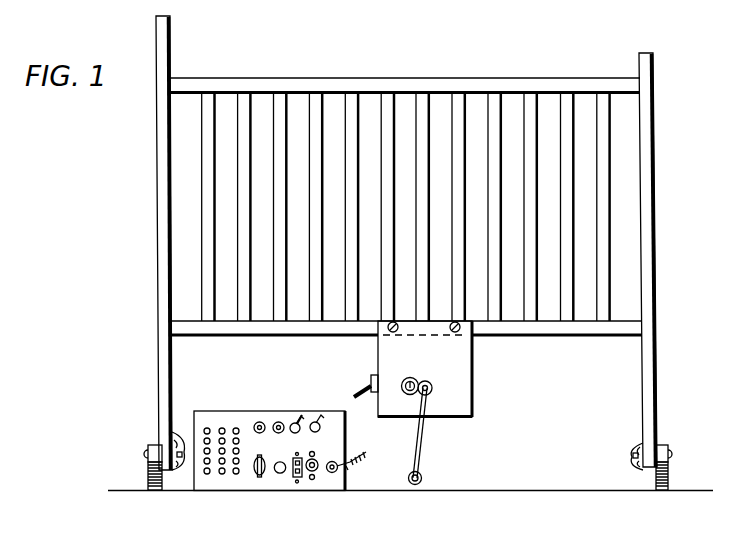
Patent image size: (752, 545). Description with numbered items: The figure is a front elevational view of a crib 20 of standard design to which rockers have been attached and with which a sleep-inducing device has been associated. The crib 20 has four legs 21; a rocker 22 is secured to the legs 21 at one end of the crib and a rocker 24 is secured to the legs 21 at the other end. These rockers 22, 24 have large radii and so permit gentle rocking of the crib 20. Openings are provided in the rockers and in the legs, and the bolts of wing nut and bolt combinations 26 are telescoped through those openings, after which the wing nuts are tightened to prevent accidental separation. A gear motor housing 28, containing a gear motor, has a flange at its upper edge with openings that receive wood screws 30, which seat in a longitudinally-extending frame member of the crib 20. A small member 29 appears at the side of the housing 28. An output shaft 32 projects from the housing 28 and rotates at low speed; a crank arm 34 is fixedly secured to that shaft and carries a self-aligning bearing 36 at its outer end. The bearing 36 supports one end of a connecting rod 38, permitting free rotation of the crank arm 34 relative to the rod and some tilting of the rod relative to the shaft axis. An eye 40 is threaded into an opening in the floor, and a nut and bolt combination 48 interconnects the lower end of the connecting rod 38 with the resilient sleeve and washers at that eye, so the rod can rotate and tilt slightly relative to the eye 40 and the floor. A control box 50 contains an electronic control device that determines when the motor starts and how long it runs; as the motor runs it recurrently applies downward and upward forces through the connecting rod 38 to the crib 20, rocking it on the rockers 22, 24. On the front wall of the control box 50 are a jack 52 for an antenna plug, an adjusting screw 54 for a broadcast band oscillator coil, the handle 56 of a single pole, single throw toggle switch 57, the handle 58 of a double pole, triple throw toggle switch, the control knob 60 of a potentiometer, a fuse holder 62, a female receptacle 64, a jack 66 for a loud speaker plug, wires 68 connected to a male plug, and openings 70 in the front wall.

The crib 20 is at (648, 262).
The legs 21 is at (163, 362).
The rocker 22 is at (150, 477).
The rocker 24 is at (668, 483).
The wing nut and bolt combinations 26 is at (167, 432).
The gear motor housing 28 is at (462, 367).
The release handle 29 is at (361, 391).
The wood screws 30 is at (393, 333).
The output shaft 32 is at (412, 377).
The crank arm 34 is at (409, 396).
The self-aligning bearing 36 is at (433, 388).
The connecting rod 38 is at (427, 440).
The eye 40 is at (422, 478).
The nut and bolt combination 48 is at (412, 485).
The control box 50 is at (208, 410).
The jack 52 is at (258, 422).
The adjusting screw 54 is at (278, 422).
The handle 56 is at (297, 423).
The toggle switch 57 is at (299, 433).
The handle 58 is at (318, 420).
The control knob 60 is at (257, 478).
The fuse holder 62 is at (279, 474).
The female receptacle 64 is at (297, 483).
The jack 66 is at (320, 478).
The wires 68 is at (372, 462).
The openings 70 is at (207, 478).